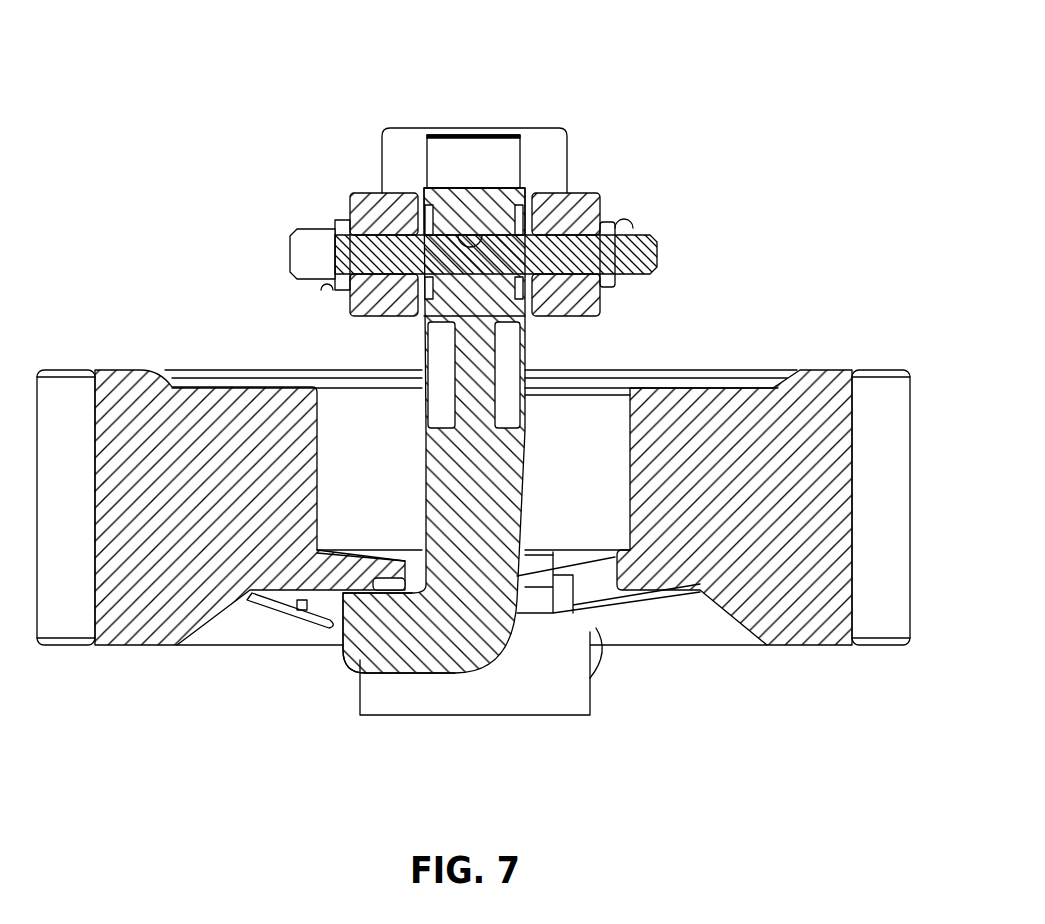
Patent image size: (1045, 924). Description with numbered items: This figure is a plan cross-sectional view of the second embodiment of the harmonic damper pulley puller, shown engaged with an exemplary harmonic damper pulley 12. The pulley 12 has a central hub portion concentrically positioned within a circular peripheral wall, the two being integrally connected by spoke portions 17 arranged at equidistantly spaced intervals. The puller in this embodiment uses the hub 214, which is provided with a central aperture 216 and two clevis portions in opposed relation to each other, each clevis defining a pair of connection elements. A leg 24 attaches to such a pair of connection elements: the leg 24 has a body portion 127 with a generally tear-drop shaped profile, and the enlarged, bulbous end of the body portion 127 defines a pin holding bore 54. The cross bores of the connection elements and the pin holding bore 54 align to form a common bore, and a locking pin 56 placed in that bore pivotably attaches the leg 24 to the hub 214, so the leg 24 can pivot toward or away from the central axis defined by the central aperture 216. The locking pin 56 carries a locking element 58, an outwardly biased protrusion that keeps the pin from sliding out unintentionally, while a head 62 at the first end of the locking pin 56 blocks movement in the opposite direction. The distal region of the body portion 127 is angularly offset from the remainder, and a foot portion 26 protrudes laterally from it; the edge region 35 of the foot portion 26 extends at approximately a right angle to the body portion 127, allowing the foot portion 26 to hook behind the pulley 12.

The harmonic damper pulley 12 is at (881, 329).
The spoke portion 17 is at (345, 592).
The leg 24 is at (566, 344).
The foot portion 26 is at (373, 643).
The edge region 35 is at (425, 613).
The pin holding bore 54 is at (494, 238).
The locking pin 56 is at (636, 250).
The locking element 58 is at (633, 214).
The head 62 is at (325, 288).
The body portion 127 is at (497, 481).
The hub 214 is at (584, 127).
The central aperture 216 is at (444, 145).